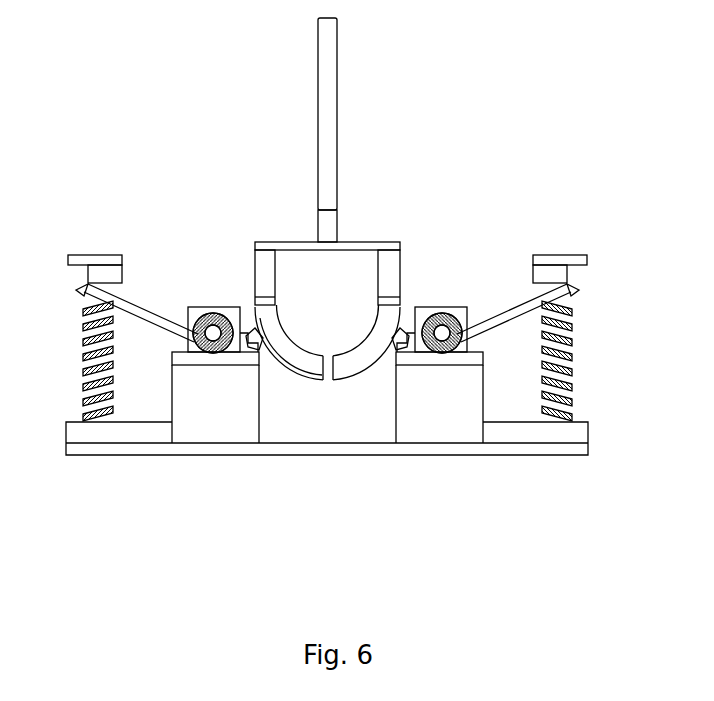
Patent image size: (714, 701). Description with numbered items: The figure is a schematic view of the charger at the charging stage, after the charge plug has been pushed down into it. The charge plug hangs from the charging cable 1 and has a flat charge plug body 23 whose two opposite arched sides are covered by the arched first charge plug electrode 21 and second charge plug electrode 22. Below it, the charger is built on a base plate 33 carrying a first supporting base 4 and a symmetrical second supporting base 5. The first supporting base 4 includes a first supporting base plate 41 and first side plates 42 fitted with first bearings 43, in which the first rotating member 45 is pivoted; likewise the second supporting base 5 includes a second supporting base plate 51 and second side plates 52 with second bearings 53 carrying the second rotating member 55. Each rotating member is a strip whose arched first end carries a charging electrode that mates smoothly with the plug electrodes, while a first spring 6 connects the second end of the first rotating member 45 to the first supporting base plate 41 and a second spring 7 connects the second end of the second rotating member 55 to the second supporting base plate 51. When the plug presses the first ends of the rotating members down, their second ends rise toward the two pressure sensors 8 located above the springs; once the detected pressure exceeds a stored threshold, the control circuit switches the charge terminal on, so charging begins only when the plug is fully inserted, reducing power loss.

The charging cable 1 is at (331, 108).
The charge plug body 23 is at (338, 260).
The second charge plug electrode 22 is at (403, 320).
The first charge plug electrode 21 is at (256, 323).
The first side plate 42 is at (192, 308).
The first bearing 43 is at (221, 318).
The first supporting base 4 is at (213, 425).
The first supporting base plate 41 is at (120, 435).
The base plate 33 is at (298, 450).
The second supporting base plate 51 is at (530, 437).
The pressure sensor 8 is at (94, 256).
The first rotating member 45 is at (138, 308).
The first spring 6 is at (95, 382).
The second side plate 52 is at (420, 308).
The second bearing 53 is at (458, 323).
The second supporting base 5 is at (432, 425).
The second rotating member 55 is at (503, 311).
The second spring 7 is at (568, 382).